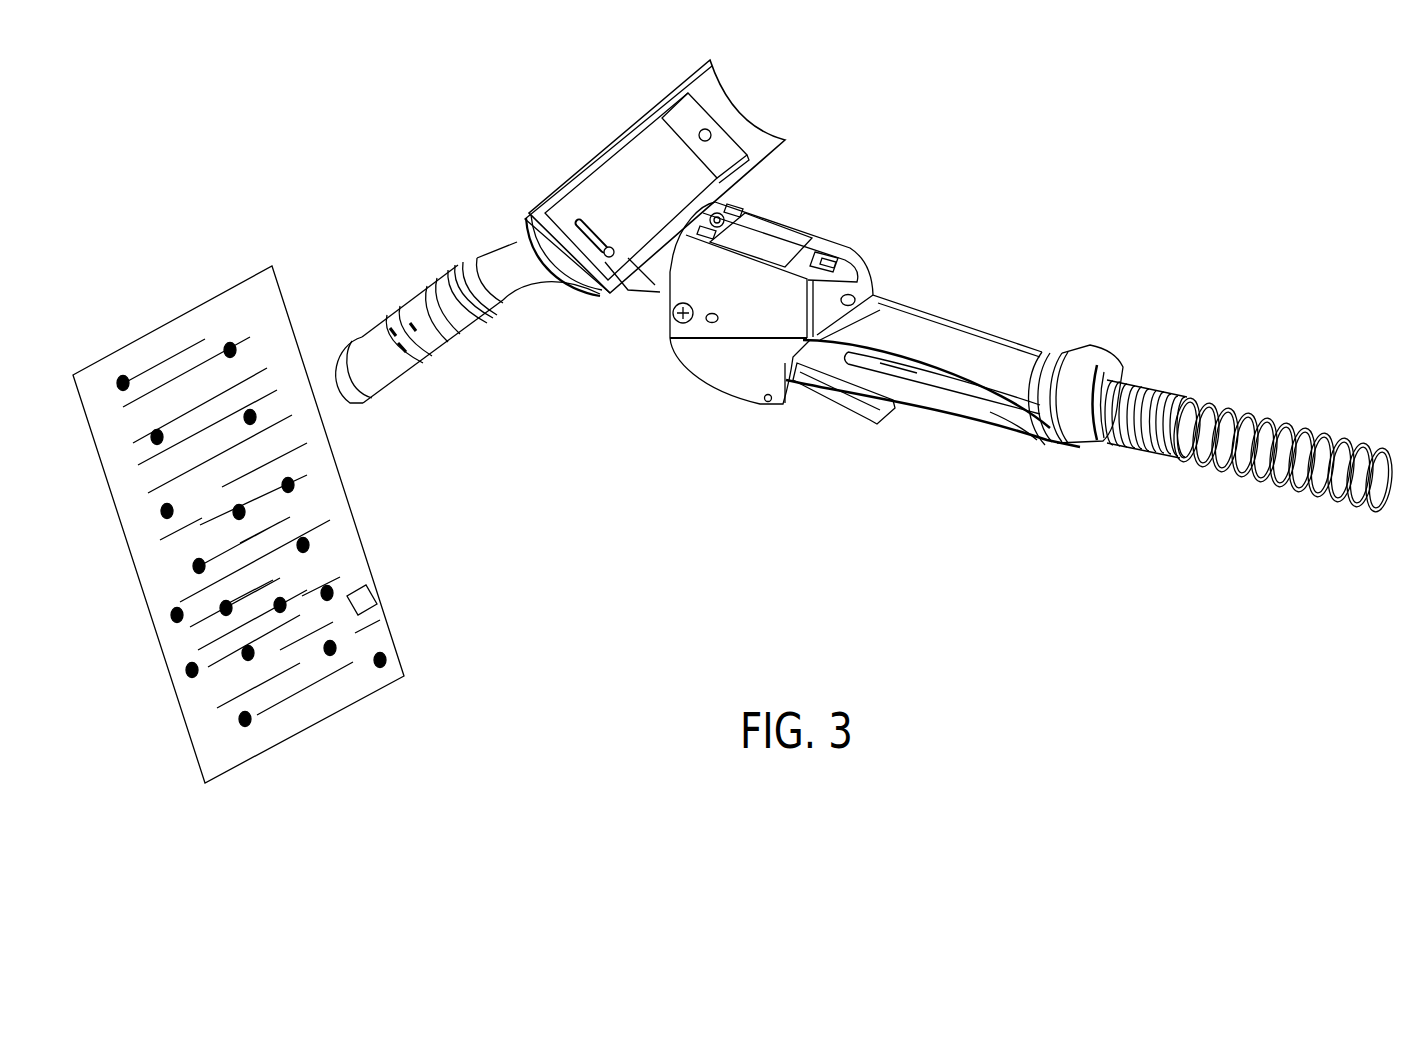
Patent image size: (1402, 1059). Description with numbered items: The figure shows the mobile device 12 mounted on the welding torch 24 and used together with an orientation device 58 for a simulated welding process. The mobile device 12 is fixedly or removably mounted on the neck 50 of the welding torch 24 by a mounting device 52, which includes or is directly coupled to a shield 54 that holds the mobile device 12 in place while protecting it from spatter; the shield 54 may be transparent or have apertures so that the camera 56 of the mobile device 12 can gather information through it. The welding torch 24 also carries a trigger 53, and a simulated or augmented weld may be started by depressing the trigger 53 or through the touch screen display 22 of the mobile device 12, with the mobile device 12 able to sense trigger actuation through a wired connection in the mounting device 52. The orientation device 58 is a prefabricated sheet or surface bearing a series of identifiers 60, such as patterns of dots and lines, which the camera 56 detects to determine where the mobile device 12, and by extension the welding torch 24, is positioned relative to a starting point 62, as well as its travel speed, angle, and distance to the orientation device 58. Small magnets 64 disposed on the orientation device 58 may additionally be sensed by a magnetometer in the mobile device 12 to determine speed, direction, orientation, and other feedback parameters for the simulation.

The mobile device 12 is at (621, 138).
The touch screen display 22 is at (610, 195).
The welding torch 24 is at (921, 163).
The neck 50 is at (515, 240).
The mounting device 52 is at (643, 300).
The trigger 53 is at (837, 382).
The shield 54 is at (672, 97).
The camera 56 is at (618, 282).
The orientation device 58 is at (190, 243).
The identifiers 60 is at (167, 512).
The starting point 62 is at (381, 667).
The magnets 64 is at (377, 586).